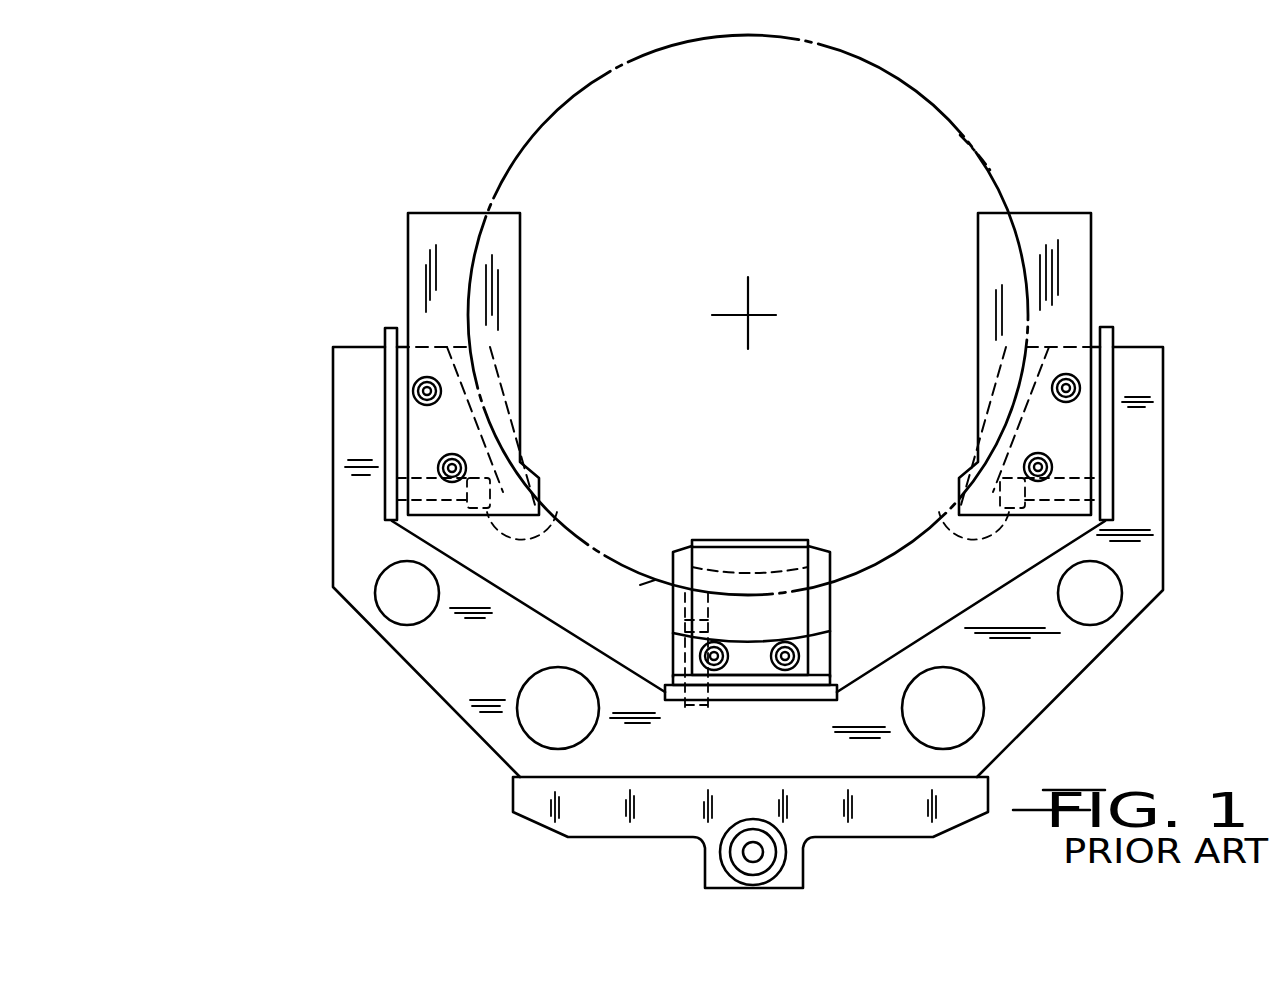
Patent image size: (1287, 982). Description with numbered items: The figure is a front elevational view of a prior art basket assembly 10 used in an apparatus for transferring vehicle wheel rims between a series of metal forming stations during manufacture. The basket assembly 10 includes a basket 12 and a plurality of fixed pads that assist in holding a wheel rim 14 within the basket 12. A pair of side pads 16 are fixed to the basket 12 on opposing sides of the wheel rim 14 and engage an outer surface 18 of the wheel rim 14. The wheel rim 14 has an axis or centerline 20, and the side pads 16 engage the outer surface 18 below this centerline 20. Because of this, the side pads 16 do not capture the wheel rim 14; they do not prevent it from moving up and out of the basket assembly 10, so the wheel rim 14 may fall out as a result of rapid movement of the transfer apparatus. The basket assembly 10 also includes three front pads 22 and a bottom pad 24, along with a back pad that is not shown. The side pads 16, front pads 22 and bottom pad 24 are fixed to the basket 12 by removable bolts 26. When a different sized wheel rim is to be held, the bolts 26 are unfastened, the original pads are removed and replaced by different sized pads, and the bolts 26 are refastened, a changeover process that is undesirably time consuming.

The basket assembly 10 is at (288, 168).
The basket 12 is at (442, 662).
The wheel rim 14 is at (940, 109).
The side pads 16 is at (517, 432).
The outer surface 18 is at (987, 157).
The centerline 20 is at (748, 312).
The front pads 22 is at (425, 230).
The bottom pad 24 is at (645, 587).
The removable bolts 26 is at (437, 467).